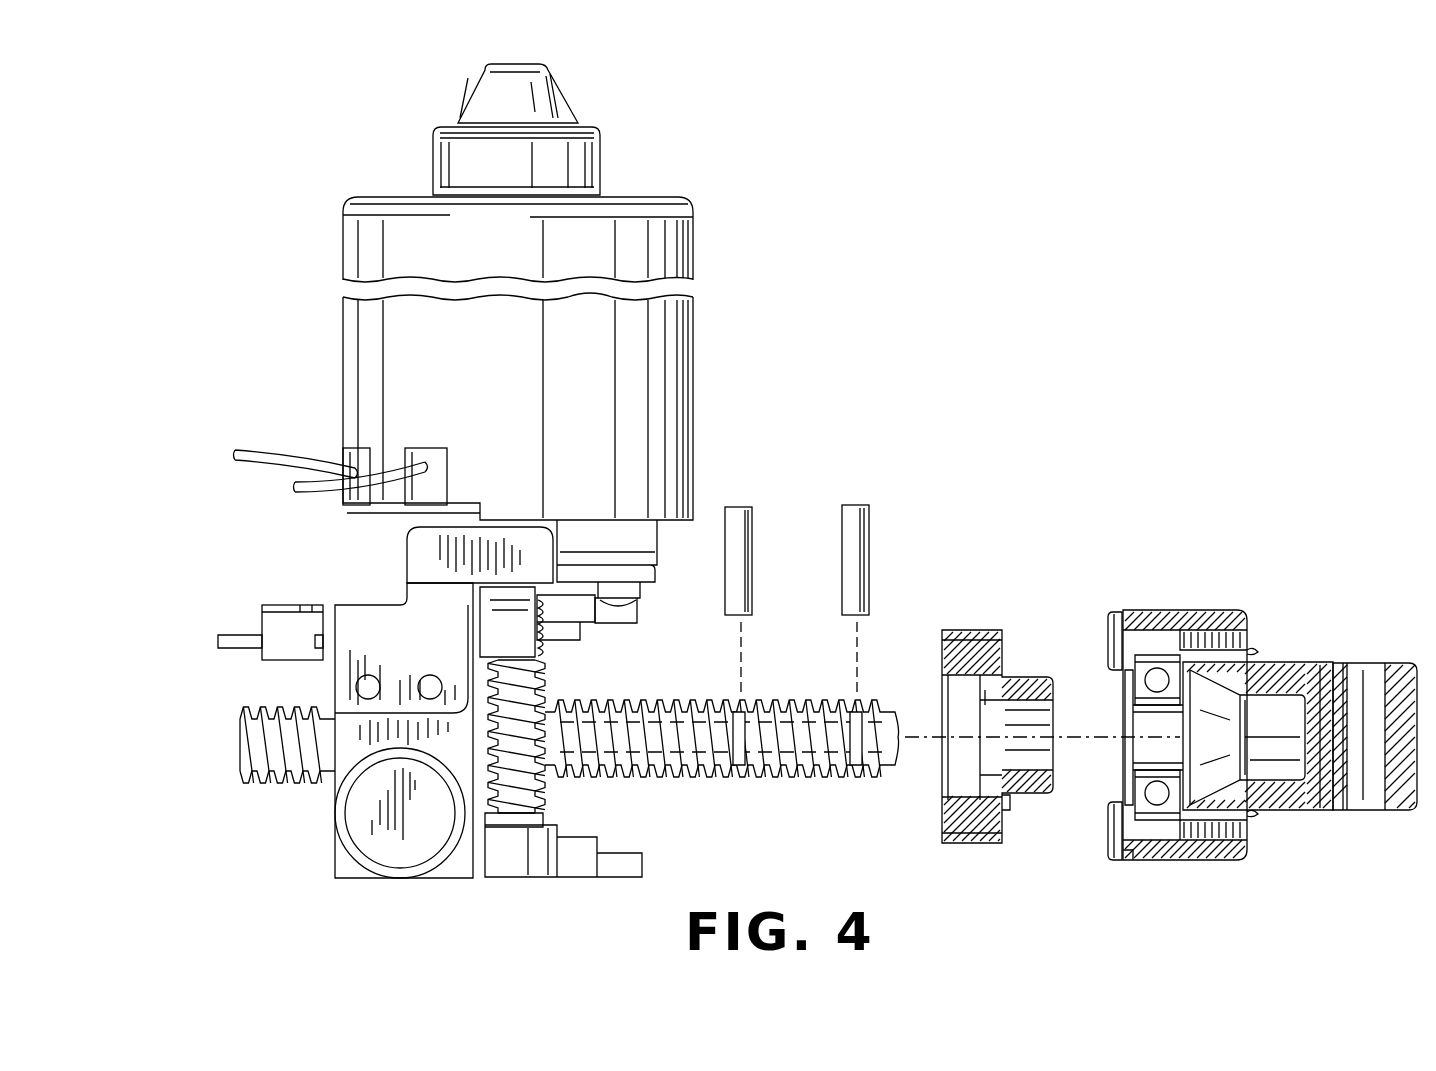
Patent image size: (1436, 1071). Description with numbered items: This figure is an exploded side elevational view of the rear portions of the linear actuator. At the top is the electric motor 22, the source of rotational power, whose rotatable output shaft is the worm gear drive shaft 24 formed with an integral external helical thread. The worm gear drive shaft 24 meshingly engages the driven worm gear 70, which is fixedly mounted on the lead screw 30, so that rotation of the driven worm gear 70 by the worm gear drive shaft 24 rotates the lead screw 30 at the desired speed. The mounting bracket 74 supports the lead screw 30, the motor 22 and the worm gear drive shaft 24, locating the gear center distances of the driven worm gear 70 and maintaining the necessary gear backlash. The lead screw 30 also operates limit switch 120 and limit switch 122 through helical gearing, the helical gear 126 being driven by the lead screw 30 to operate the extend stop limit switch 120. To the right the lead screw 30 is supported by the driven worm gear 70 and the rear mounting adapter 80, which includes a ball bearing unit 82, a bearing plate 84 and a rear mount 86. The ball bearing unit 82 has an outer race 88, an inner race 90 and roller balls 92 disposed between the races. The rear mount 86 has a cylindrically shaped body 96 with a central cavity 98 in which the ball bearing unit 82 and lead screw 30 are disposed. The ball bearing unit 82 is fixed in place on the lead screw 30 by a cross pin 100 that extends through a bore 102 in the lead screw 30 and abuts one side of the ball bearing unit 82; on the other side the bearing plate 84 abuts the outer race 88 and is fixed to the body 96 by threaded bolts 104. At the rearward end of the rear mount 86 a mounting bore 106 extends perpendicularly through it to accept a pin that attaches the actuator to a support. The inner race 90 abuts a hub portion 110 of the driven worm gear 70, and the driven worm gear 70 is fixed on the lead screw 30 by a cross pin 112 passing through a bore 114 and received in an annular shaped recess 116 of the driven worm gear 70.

The electric motor 22 is at (693, 335).
The worm gear drive shaft 24 is at (543, 800).
The lead screw 30 is at (293, 780).
The driven worm gear 70 is at (1003, 650).
The mounting bracket 74 is at (357, 620).
The rear mounting adapter 80 is at (1272, 628).
The ball bearing unit 82 is at (1107, 676).
The bearing plate 84 is at (1128, 858).
The rear mount 86 is at (1325, 814).
The outer race 88 is at (1142, 660).
The inner race 90 is at (1138, 697).
The roller balls 92 is at (1160, 680).
The cylindrically shaped body 96 is at (1293, 812).
The central cavity 98 is at (1213, 783).
The cross pin 100 is at (870, 530).
The bore 102 is at (857, 778).
The threaded bolts 104 is at (1112, 615).
The mounting bore 106 is at (1355, 663).
The hub portion 110 is at (1025, 680).
The cross pin 112 is at (755, 528).
The bore 114 is at (747, 778).
The annular shaped recess 116 is at (985, 697).
The limit switch 120 is at (288, 648).
The limit switch 122 is at (540, 630).
The helical gear 126 is at (370, 862).